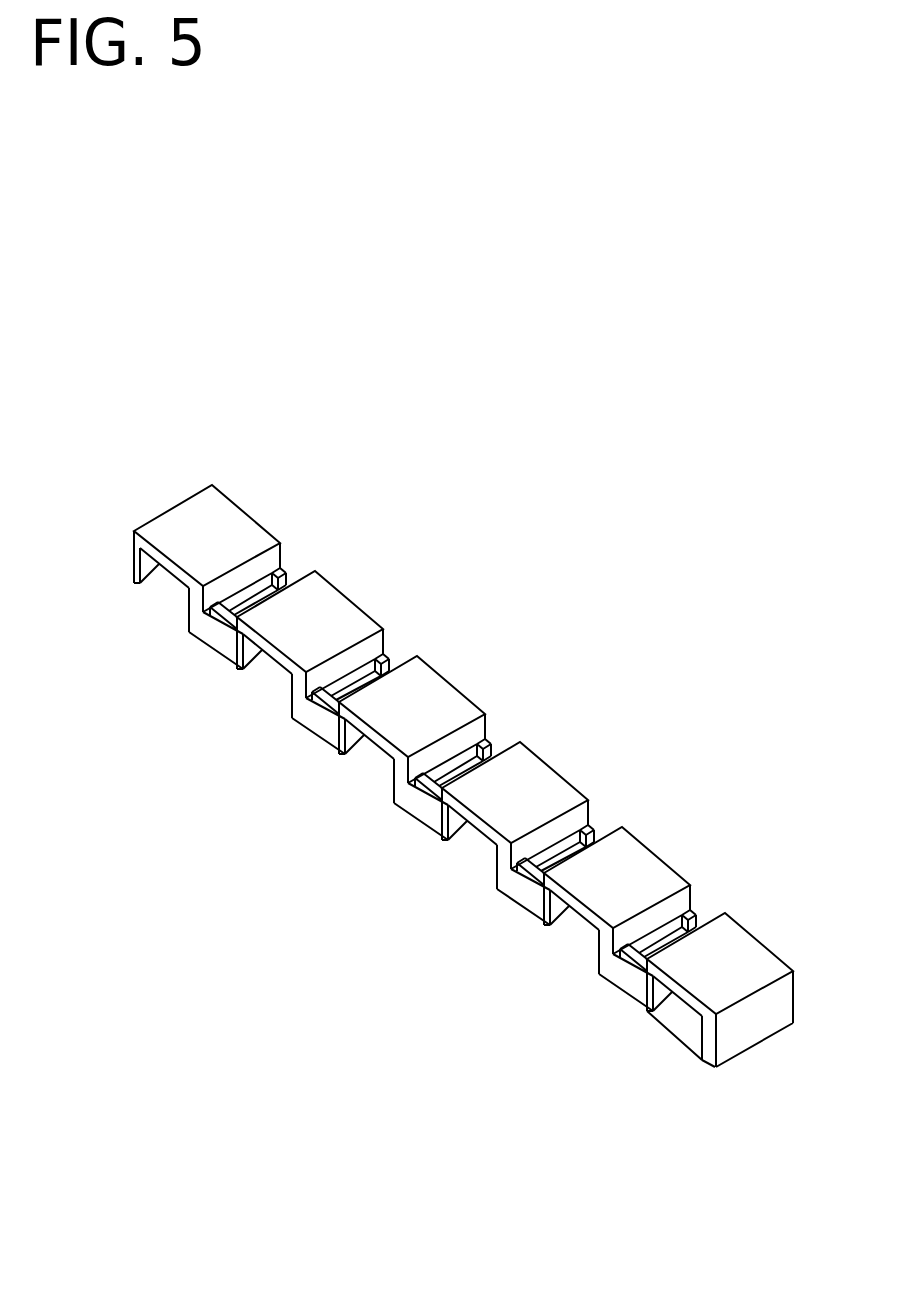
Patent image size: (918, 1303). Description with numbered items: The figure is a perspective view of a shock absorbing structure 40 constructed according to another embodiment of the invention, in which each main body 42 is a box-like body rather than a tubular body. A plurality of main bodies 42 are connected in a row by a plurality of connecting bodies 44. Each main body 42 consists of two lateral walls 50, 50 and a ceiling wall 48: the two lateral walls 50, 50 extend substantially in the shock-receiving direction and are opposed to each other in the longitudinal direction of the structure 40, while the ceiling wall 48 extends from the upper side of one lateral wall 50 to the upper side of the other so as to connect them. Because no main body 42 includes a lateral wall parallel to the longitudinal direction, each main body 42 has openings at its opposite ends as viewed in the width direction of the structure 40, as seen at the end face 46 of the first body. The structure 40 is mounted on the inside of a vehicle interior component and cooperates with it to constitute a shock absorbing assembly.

The shock absorbing structure 40 is at (517, 501).
The main body 42 is at (340, 575).
The connecting body 44 is at (493, 753).
The end block top 46 is at (207, 547).
The ceiling wall 48 is at (348, 622).
The lateral wall 50 is at (273, 558).